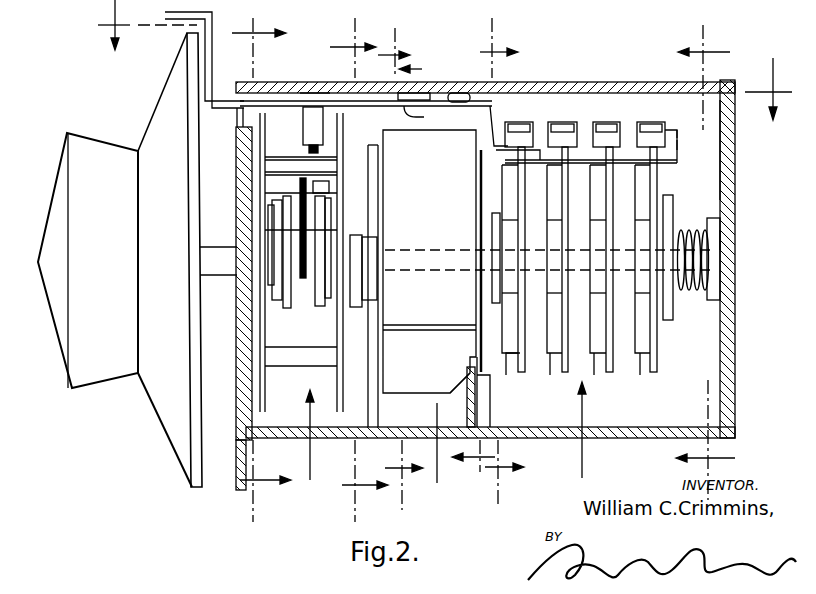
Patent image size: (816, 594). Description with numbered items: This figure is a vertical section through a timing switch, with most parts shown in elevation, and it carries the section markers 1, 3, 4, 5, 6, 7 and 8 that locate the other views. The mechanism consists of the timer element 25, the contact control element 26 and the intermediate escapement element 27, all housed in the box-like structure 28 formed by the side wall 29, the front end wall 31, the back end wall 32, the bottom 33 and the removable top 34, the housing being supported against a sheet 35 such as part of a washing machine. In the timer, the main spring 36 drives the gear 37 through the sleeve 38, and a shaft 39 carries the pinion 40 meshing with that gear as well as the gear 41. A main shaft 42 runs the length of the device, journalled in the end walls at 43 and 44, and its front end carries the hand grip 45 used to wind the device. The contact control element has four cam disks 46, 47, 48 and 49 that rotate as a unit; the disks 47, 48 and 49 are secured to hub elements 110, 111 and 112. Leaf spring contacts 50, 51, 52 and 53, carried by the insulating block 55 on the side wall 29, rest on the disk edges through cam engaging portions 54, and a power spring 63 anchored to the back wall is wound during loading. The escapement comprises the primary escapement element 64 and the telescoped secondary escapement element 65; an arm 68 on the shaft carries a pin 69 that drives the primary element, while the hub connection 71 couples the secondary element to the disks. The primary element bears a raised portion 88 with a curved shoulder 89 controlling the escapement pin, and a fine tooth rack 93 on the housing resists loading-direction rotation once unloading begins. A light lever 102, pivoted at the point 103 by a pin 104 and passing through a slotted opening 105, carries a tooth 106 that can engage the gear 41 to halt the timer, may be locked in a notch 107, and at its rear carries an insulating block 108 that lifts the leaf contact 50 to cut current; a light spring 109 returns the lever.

The section line 1- 1 is at (445, 60).
The section line 3- 3 is at (261, 269).
The section line 4- 4 is at (359, 270).
The section line 5- 5 is at (502, 262).
The section line 6- 6 is at (705, 262).
The section line 7- 7 is at (400, 269).
The section line 8- 8 is at (447, 267).
The timer element 25 is at (307, 445).
The contact control element 26 is at (579, 445).
The intermediate escapement element 27 is at (437, 454).
The box-like structure 28 is at (588, 74).
The side wall 29 is at (697, 172).
The front end wall 31 is at (240, 405).
The back end wall 32 is at (727, 333).
The bottom 33 is at (626, 440).
The removable top 34 is at (312, 88).
The sheet 35 is at (238, 470).
The main spring 36 is at (278, 305).
The gear 37 is at (326, 310).
The sleeve 38 is at (313, 272).
The shaft 39 is at (272, 207).
The pinion 40 is at (329, 187).
The gear 41 is at (319, 150).
The main shaft 42 is at (212, 258).
The journal 43 is at (200, 284).
The journal 44 is at (728, 239).
The hand grip 45 is at (97, 168).
The cam disk 46 is at (520, 200).
The cam disk 47 is at (563, 200).
The cam disk 48 is at (605, 200).
The cam disk 49 is at (657, 187).
The leaf spring contact 50 is at (522, 121).
The leaf spring contact 51 is at (561, 121).
The leaf spring contact 52 is at (606, 121).
The leaf spring contact 53 is at (645, 121).
The cam engaging portion 54 is at (677, 143).
The insulating block 55 is at (677, 135).
The power spring 63 is at (693, 230).
The primary escapement element 64 is at (429, 261).
The secondary escapement element 65 is at (489, 378).
The arm 68 is at (357, 307).
The pin 69 is at (366, 291).
The hub connection 71 is at (485, 213).
The raised portion 88 is at (428, 338).
The curved shoulder 89 is at (462, 376).
The fine tooth rack 93 is at (470, 393).
The light lever 102 is at (285, 100).
The pivot point 103 is at (430, 117).
The pin 104 is at (422, 98).
The slotted opening 105 is at (240, 99).
The tooth 106 is at (307, 133).
The notch 107 is at (236, 123).
The insulating block 108 is at (493, 147).
The light spring 109 is at (465, 92).
The hub element 110 is at (556, 374).
The hub element 111 is at (604, 374).
The hub element 112 is at (650, 374).